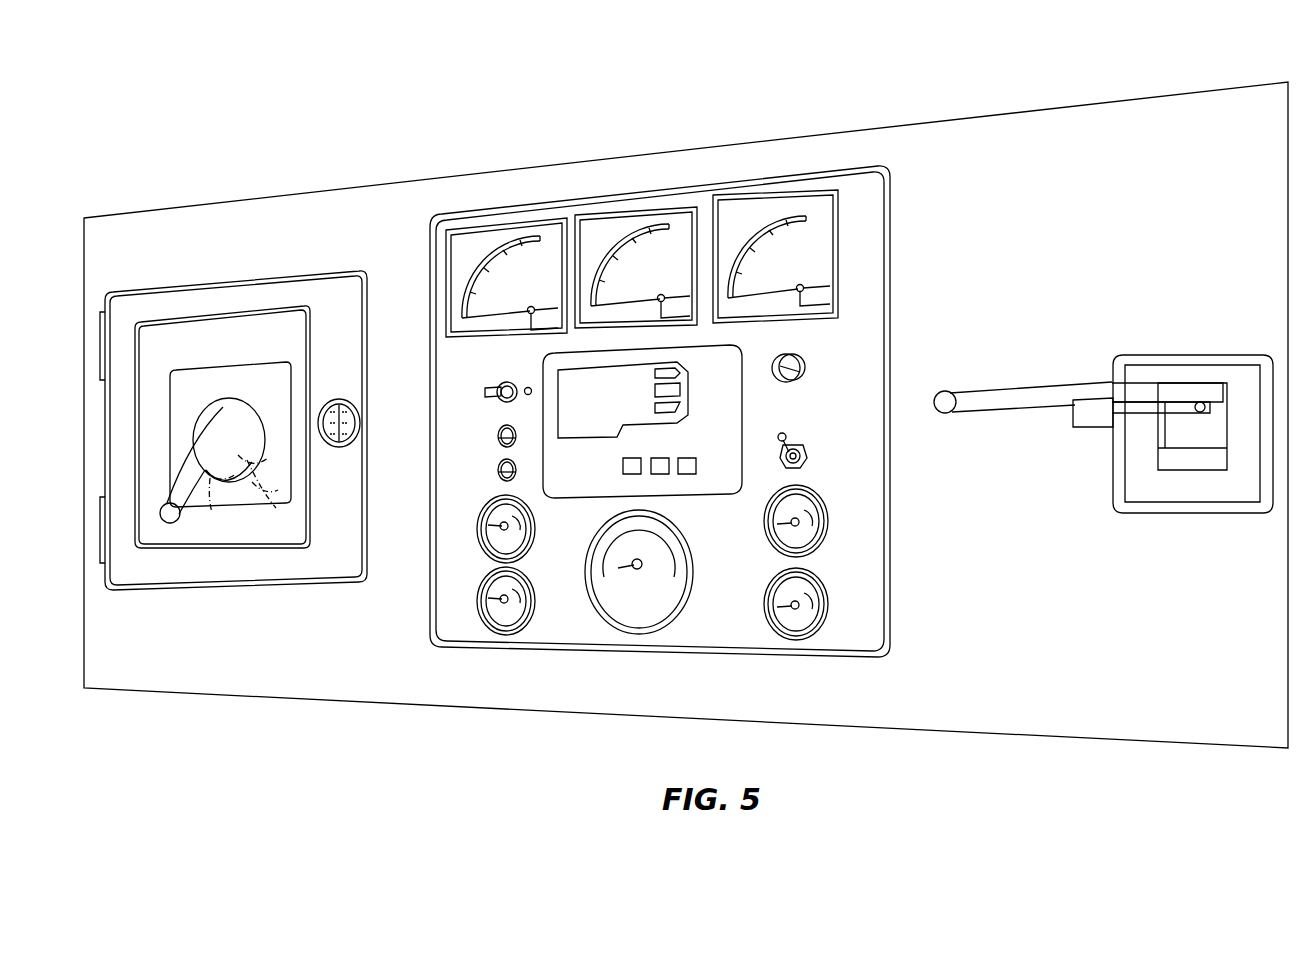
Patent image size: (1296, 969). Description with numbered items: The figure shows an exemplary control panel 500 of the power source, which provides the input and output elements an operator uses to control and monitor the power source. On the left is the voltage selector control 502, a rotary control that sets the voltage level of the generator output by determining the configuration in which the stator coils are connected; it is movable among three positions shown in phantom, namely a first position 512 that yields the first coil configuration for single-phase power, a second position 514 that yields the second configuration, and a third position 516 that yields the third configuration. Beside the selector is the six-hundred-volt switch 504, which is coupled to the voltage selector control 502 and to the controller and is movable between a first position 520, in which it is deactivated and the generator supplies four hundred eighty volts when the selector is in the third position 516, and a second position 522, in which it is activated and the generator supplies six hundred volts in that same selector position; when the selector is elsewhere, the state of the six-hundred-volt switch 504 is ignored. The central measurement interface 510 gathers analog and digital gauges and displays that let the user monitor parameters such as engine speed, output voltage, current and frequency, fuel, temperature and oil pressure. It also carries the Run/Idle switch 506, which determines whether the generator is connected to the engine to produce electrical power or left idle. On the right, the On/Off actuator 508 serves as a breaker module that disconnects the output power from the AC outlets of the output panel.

The control panel 500 is at (1017, 82).
The voltage selector control 502 is at (190, 369).
The 600V switch 504 is at (337, 450).
The Run/Idle switch 506 is at (812, 450).
The On/Off actuator 508 is at (1203, 514).
The measurement interface 510 is at (725, 168).
The first position 512 is at (168, 522).
The second position 514 is at (212, 512).
The third position 516 is at (276, 508).
The first position 520 is at (318, 407).
The second position 522 is at (370, 427).